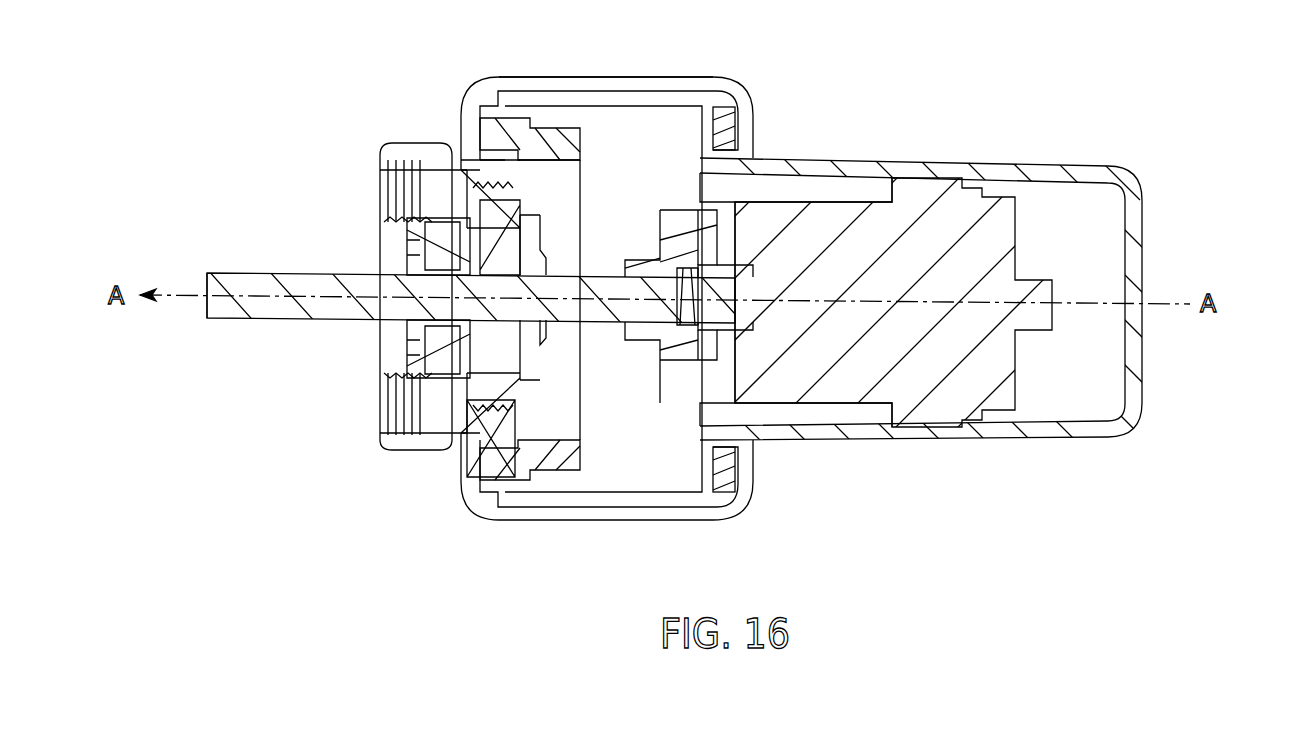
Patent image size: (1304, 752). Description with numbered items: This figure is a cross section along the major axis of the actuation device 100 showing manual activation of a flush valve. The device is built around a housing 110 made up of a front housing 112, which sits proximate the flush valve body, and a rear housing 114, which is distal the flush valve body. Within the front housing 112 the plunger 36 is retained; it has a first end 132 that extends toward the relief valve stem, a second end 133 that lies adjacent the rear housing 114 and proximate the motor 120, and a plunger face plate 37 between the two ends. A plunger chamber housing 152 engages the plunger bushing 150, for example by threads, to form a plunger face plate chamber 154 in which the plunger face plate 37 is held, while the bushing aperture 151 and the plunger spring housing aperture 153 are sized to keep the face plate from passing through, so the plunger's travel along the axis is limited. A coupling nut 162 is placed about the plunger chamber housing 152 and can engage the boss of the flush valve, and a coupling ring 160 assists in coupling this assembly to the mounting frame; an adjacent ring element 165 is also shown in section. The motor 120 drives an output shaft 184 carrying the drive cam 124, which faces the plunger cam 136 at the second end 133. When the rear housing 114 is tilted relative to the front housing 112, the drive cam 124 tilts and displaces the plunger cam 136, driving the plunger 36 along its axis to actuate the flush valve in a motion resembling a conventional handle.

The actuation device 100 is at (1178, 347).
The housing 110 is at (762, 531).
The front housing 112 is at (685, 76).
The rear housing 114 is at (1130, 185).
The motor 120 is at (950, 402).
The drive cam 124 is at (718, 245).
The first end 132 is at (240, 270).
The second end 133 is at (665, 250).
The plunger cam 136 is at (667, 362).
The plunger bushing 150 is at (393, 217).
The bushing aperture 151 is at (380, 340).
The plunger chamber housing 152 is at (546, 375).
The plunger spring housing aperture 153 is at (470, 412).
The plunger face plate chamber 154 is at (435, 398).
The coupling ring 160 is at (557, 130).
The coupling nut 162 is at (415, 143).
The seal ring 165 is at (692, 105).
The output shaft 184 is at (757, 332).
The plunger 36 is at (236, 320).
The plunger face plate 37 is at (537, 247).